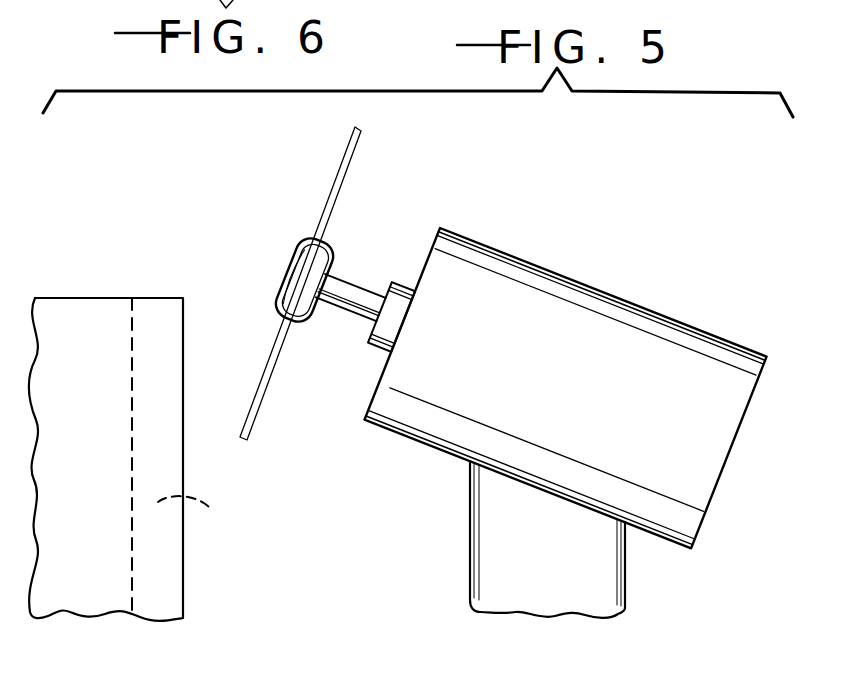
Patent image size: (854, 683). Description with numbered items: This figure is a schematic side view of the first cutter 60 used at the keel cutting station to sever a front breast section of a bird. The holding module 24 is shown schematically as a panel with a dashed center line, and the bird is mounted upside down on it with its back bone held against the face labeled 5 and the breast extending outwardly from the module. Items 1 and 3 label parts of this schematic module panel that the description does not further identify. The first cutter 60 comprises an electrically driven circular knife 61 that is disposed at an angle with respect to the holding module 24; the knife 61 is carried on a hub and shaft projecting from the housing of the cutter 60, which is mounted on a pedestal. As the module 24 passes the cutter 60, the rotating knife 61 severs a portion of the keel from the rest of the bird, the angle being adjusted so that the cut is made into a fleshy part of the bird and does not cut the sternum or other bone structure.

The panel 1 is at (85, 298).
The holding module 24 is at (140, 294).
The panel section 3 is at (103, 490).
The face 5 is at (196, 512).
The first cutter 60 is at (588, 268).
The circular knife 61 is at (352, 157).